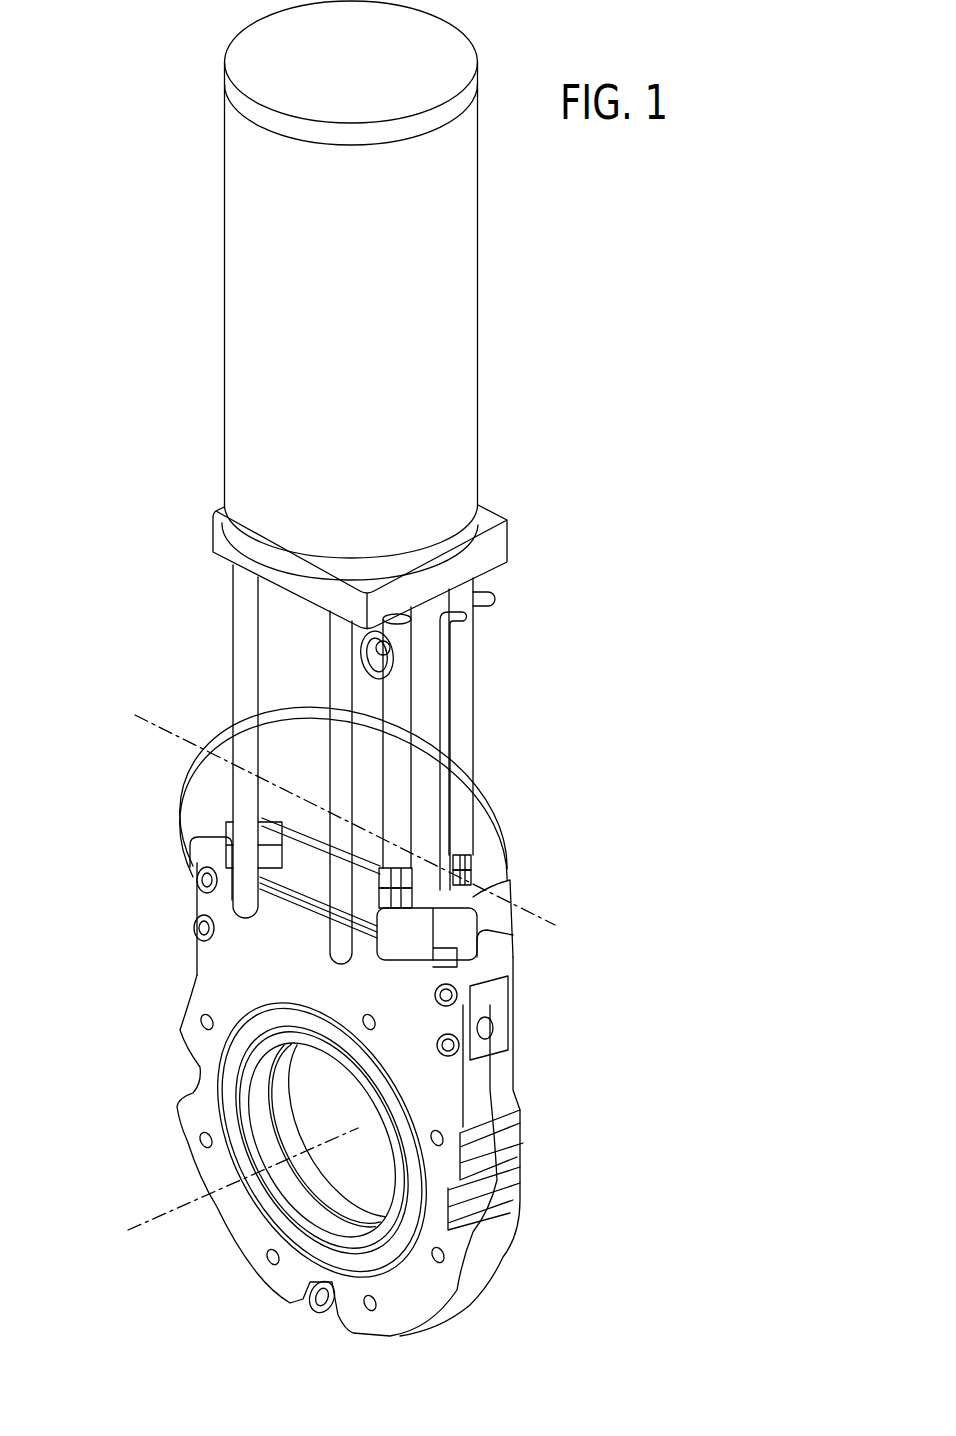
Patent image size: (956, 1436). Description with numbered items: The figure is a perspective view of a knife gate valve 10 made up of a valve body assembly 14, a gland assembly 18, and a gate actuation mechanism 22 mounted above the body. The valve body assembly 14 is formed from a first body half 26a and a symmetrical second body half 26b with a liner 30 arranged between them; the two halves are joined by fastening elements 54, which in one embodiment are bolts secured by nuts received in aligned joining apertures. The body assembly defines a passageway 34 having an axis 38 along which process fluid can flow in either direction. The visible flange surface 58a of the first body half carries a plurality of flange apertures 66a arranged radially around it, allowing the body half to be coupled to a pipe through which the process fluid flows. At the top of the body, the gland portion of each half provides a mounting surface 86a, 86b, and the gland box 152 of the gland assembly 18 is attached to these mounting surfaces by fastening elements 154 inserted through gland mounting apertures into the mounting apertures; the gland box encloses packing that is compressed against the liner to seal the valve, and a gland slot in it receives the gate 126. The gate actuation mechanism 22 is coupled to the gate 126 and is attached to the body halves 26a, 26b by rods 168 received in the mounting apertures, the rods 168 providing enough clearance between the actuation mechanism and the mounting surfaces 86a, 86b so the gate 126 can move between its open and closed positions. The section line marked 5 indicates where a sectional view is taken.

The knife gate valve 10 is at (175, 283).
The gate actuation mechanism 22 is at (480, 288).
The rods 168 is at (340, 698).
The gate 126 is at (428, 695).
The section line 5- 5 is at (143, 713).
The gland assembly 18 is at (576, 886).
The fastening elements 154 is at (463, 900).
The gland box 152 is at (480, 887).
The mounting surface 86a is at (257, 928).
The mounting surface 86b is at (500, 933).
The fastening element 54 is at (205, 930).
The valve body assembly 14 is at (582, 1119).
The first body half 26a is at (472, 1263).
The second body half 26b is at (505, 1247).
The flange surface 58a is at (233, 1213).
The liner 30 is at (328, 1190).
The passageway 34 is at (344, 1097).
The axis 38 is at (155, 1216).
The flange apertures 66a is at (205, 1140).